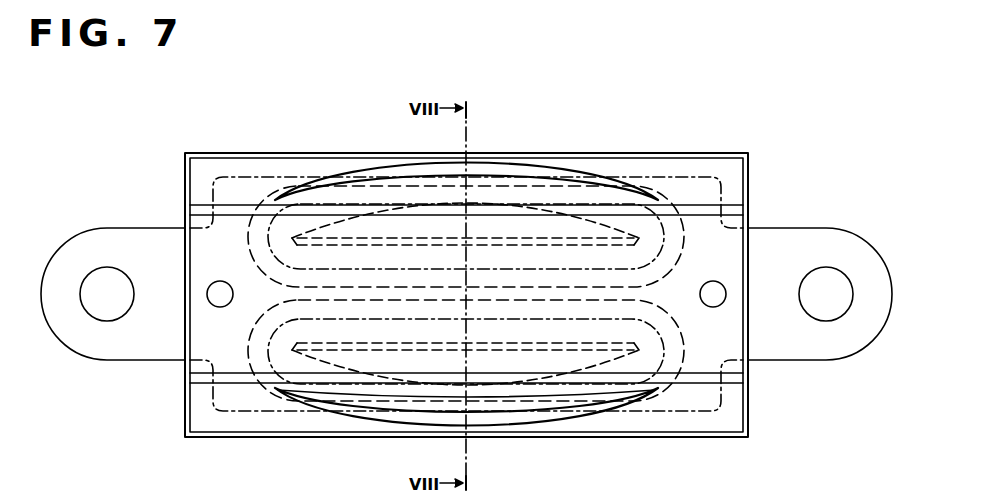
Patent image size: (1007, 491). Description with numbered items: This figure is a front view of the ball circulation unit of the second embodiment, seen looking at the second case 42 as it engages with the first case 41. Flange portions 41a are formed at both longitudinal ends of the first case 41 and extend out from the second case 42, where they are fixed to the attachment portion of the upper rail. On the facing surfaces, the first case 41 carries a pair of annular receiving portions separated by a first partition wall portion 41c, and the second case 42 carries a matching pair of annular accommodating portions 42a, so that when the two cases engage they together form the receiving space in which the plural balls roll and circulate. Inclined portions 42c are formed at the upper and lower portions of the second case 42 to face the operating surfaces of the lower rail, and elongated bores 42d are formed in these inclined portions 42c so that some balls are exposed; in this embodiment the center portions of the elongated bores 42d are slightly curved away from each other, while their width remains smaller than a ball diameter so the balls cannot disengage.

The first case 41 is at (785, 360).
The flange portions 41a is at (118, 239).
The first partition wall portion 41c is at (508, 297).
The second case 42 is at (735, 153).
The annular accommodating portions 42a is at (674, 232).
The inclined portions 42c is at (466, 294).
The elongated bores 42d is at (511, 169).